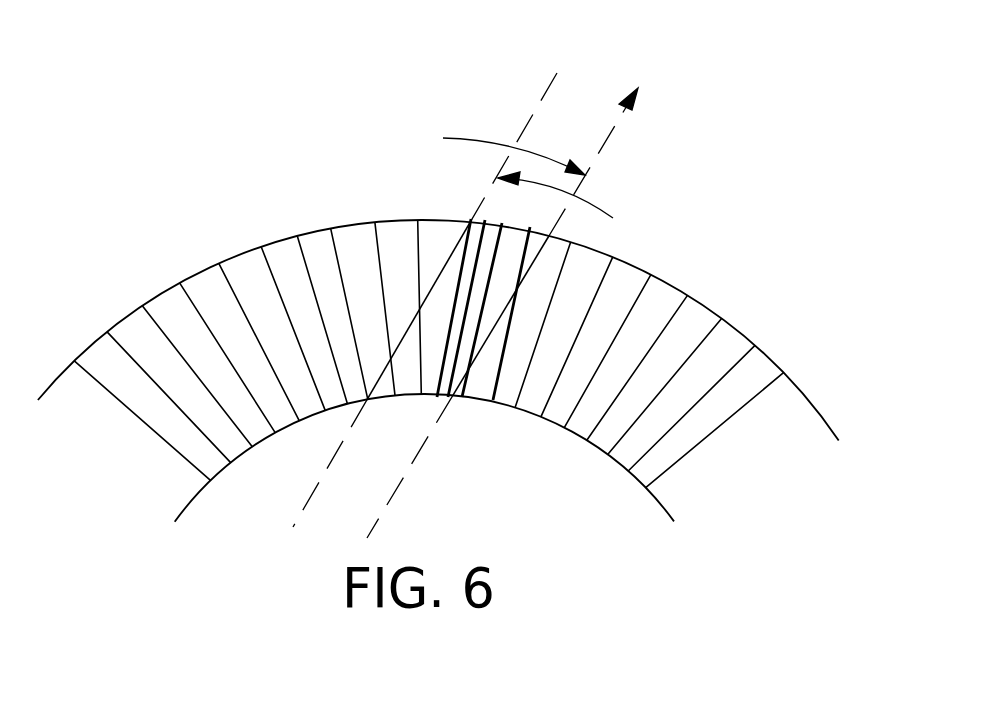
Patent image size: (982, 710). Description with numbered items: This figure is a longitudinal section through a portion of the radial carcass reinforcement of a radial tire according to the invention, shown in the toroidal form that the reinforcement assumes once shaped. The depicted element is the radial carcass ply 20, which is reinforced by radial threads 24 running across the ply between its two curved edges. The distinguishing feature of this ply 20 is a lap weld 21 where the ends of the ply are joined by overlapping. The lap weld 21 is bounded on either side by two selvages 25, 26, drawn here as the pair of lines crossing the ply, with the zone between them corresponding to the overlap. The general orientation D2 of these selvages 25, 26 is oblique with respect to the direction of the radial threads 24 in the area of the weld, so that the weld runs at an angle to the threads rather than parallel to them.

The radial carcass ply 20 is at (667, 242).
The lap weld 21 is at (471, 262).
The radial threads 24 is at (270, 266).
The selvage 25 is at (473, 367).
The selvage 26 is at (380, 392).
The general orientation of the selvages D2 is at (521, 296).